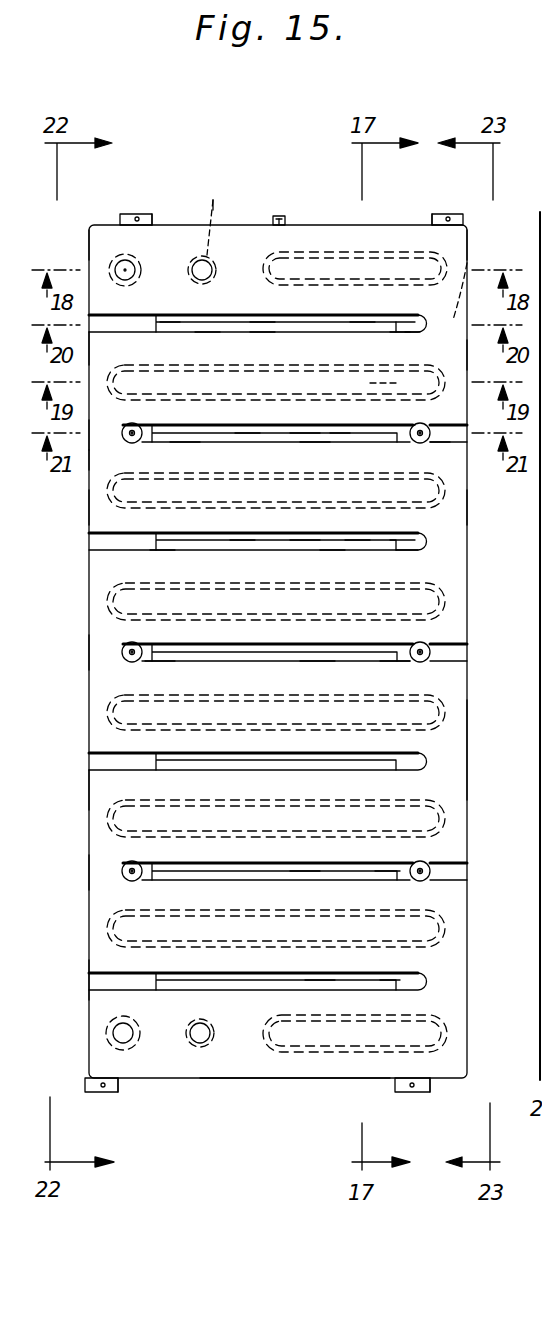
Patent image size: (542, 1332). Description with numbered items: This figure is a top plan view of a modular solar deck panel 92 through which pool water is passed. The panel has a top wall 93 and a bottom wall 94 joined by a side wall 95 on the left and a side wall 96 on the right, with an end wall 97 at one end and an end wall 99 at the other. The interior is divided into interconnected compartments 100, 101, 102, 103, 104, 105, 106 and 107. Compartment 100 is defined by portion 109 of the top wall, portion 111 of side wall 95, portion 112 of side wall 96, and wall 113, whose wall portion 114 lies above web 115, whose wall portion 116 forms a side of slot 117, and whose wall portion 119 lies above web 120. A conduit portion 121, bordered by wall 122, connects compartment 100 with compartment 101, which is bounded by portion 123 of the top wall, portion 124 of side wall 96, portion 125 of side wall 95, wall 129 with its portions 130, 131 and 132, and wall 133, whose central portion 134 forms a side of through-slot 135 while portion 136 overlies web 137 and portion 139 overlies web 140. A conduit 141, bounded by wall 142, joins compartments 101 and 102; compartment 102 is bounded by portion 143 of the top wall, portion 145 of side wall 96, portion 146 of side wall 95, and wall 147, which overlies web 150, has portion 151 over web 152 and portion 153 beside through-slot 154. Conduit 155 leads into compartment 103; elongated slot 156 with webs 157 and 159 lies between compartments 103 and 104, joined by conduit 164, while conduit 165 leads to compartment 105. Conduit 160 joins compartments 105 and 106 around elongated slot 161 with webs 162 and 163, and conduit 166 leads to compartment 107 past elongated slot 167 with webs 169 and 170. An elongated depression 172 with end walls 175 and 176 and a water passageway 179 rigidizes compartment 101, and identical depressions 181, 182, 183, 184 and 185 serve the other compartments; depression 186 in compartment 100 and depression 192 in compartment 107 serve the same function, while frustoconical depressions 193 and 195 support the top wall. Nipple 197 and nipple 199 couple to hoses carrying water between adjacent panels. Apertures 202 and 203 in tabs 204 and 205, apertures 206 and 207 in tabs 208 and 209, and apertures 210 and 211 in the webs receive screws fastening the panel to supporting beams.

The modular solar deck panel 92 is at (213, 192).
The top wall 93 is at (105, 568).
The bottom wall 94 is at (540, 567).
The side wall 95 is at (88, 790).
The side wall 96 is at (540, 700).
The end wall 97 is at (305, 225).
The end wall 99 is at (293, 1078).
The compartment 100 is at (262, 251).
The compartment 101 is at (250, 364).
The compartment 102 is at (280, 472).
The compartment 103 is at (270, 579).
The compartment 104 is at (280, 692).
The compartment 105 is at (280, 794).
The compartment 106 is at (280, 904).
The compartment 107 is at (258, 1014).
The portion of top wall 109 is at (195, 237).
The portion of side wall 111 is at (85, 242).
The portion of side wall 112 is at (470, 243).
The wall 113 is at (310, 318).
The wall portion 114 is at (150, 318).
The web 115 is at (170, 320).
The wall portion 116 is at (362, 318).
The slot 117 is at (262, 318).
The wall portion 119 is at (405, 318).
The web 120 is at (355, 268).
The conduit portion 121 is at (470, 265).
The wall 122 is at (410, 333).
The portion of top wall 123 is at (318, 442).
The portion of side wall 124 is at (470, 356).
The portion of side wall 125 is at (90, 350).
The wall 129 is at (262, 330).
The wall portion 130 is at (402, 333).
The wall portion 131 is at (207, 335).
The wall portion 132 is at (112, 330).
The wall 133 is at (305, 425).
The central portion 134 is at (248, 425).
The through-slot 135 is at (340, 428).
The wall portion 136 is at (155, 425).
The web 137 is at (185, 442).
The wall portion 139 is at (410, 430).
The web 140 is at (435, 444).
The conduit 141 is at (105, 445).
The wall 142 is at (122, 443).
The portion of upper wall 143 is at (330, 535).
The portion of side wall 145 is at (470, 508).
The portion of side wall 146 is at (88, 507).
The wall 147 is at (240, 535).
The web 150 is at (405, 545).
The wall portion 151 is at (130, 535).
The web 152 is at (157, 545).
The wall portion 153 is at (305, 535).
The through-slot 154 is at (330, 548).
The conduit 155 is at (445, 541).
The elongated slot 156 is at (318, 657).
The web 157 is at (155, 662).
The web 159 is at (395, 657).
The conduit 160 is at (100, 873).
The elongated slot 161 is at (305, 866).
The web 162 is at (170, 865).
The web 163 is at (390, 866).
The conduit 164 is at (100, 655).
The conduit 165 is at (448, 762).
The conduit 166 is at (445, 985).
The elongated slot 167 is at (320, 976).
The web 169 is at (392, 978).
The web 170 is at (103, 983).
The elongated depression 172 is at (285, 370).
The end wall 175 is at (364, 383).
The end wall 176 is at (164, 383).
The water passageway 179 is at (405, 535).
The elongated depression 181 is at (340, 480).
The elongated depression 182 is at (325, 590).
The elongated depression 183 is at (330, 702).
The elongated depression 184 is at (340, 805).
The elongated depression 185 is at (335, 915).
The depression 186 is at (337, 262).
The depression 192 is at (375, 1020).
The frustoconical depression 193 is at (125, 265).
The frustoconical depression 195 is at (100, 1031).
The nipple 197 is at (218, 203).
The nipple 199 is at (200, 1045).
The aperture 202 is at (448, 216).
The aperture 203 is at (135, 216).
The tab 204 is at (432, 217).
The tab 205 is at (160, 206).
The aperture 206 is at (410, 1090).
The aperture 207 is at (103, 1090).
The tab 208 is at (428, 1090).
The tab 209 is at (118, 1092).
The aperture 210 is at (418, 444).
The aperture 211 is at (140, 442).